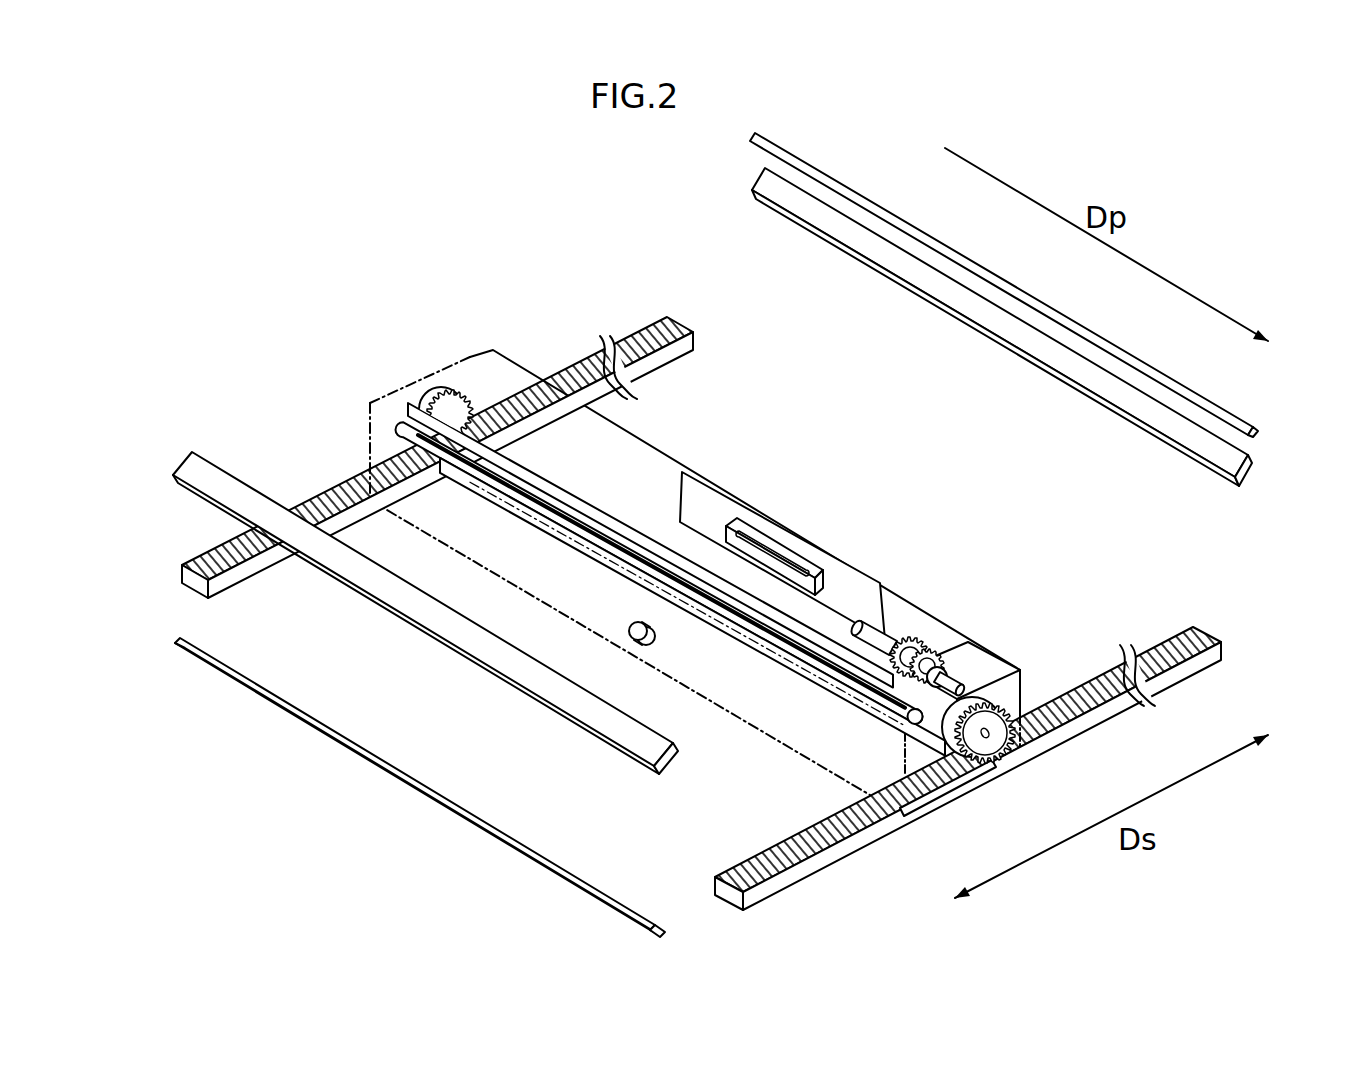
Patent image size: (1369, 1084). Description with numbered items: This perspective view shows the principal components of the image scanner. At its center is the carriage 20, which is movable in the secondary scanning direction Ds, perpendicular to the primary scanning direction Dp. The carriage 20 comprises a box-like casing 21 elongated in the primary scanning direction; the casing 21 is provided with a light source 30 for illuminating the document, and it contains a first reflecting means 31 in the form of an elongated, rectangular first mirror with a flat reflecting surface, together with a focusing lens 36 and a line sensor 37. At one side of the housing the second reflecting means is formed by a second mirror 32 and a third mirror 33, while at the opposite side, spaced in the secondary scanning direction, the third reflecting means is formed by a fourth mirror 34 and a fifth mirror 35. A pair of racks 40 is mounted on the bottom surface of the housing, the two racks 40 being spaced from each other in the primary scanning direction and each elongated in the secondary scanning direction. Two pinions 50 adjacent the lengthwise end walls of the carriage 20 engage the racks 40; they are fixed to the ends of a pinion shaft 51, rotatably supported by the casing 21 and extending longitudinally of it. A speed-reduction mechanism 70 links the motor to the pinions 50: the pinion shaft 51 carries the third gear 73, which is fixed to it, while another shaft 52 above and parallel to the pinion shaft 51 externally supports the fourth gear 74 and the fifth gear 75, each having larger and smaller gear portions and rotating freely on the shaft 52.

The carriage 20 is at (676, 451).
The casing 21 is at (1000, 650).
The light source 30 is at (798, 657).
The first reflecting means 31 is at (765, 626).
The second mirror 32 is at (1153, 427).
The third mirror 33 is at (982, 262).
The fourth mirror 34 is at (262, 490).
The fifth mirror 35 is at (556, 878).
The focusing lens 36 is at (648, 648).
The line sensor 37 is at (797, 556).
The racks 40 is at (337, 485).
The pinions 50 is at (452, 390).
The pinion shaft 51 is at (630, 520).
The shaft 52 is at (892, 638).
The speed-reduction mechanism 70 is at (943, 637).
The third gear 73 is at (918, 727).
The fourth gear 74 is at (926, 628).
The fifth gear 75 is at (958, 656).